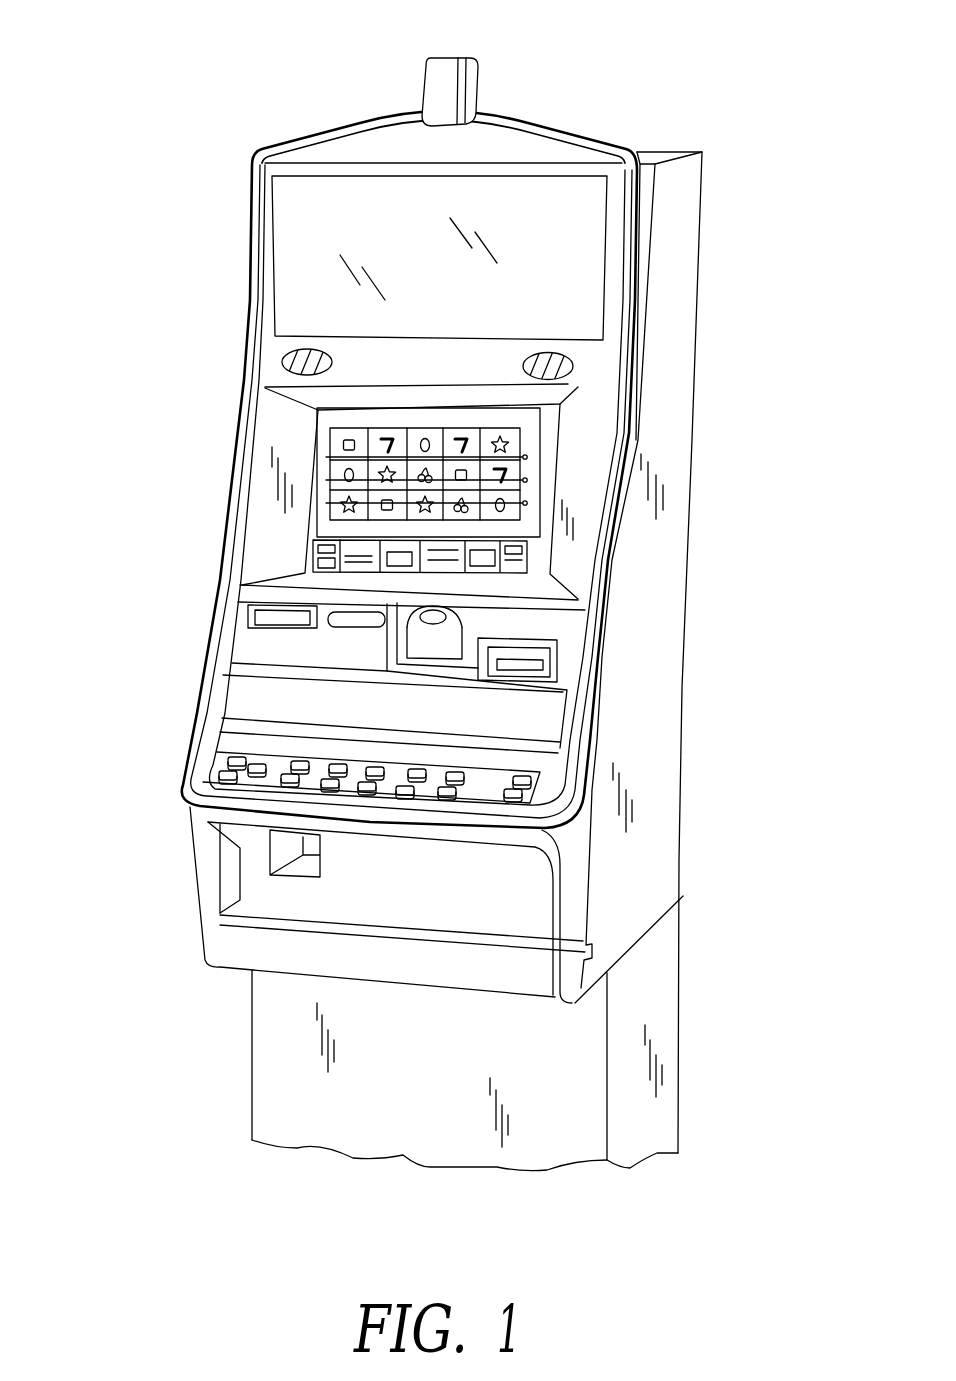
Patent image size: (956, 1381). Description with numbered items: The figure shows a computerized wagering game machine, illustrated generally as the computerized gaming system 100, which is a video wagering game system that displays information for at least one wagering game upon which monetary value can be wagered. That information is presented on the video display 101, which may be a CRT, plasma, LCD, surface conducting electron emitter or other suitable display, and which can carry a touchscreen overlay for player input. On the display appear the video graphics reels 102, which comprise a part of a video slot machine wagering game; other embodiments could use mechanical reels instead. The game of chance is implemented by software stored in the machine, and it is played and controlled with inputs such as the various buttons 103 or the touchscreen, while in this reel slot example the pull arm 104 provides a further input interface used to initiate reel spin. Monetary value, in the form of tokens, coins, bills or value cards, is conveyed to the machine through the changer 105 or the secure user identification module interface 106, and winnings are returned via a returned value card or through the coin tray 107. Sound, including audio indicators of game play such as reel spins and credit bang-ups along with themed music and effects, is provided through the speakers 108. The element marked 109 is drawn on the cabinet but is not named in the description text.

The computerized gaming system 100 is at (190, 42).
The video display 101 is at (307, 527).
The video graphics reels 102 is at (575, 263).
The buttons 103 is at (470, 432).
The pull arm 104 is at (217, 753).
The changer 105 is at (527, 548).
The secure user identification module interface 106 is at (460, 636).
The coin tray 107 is at (323, 615).
The speakers 108 is at (250, 943).
The speakers 109 is at (575, 364).